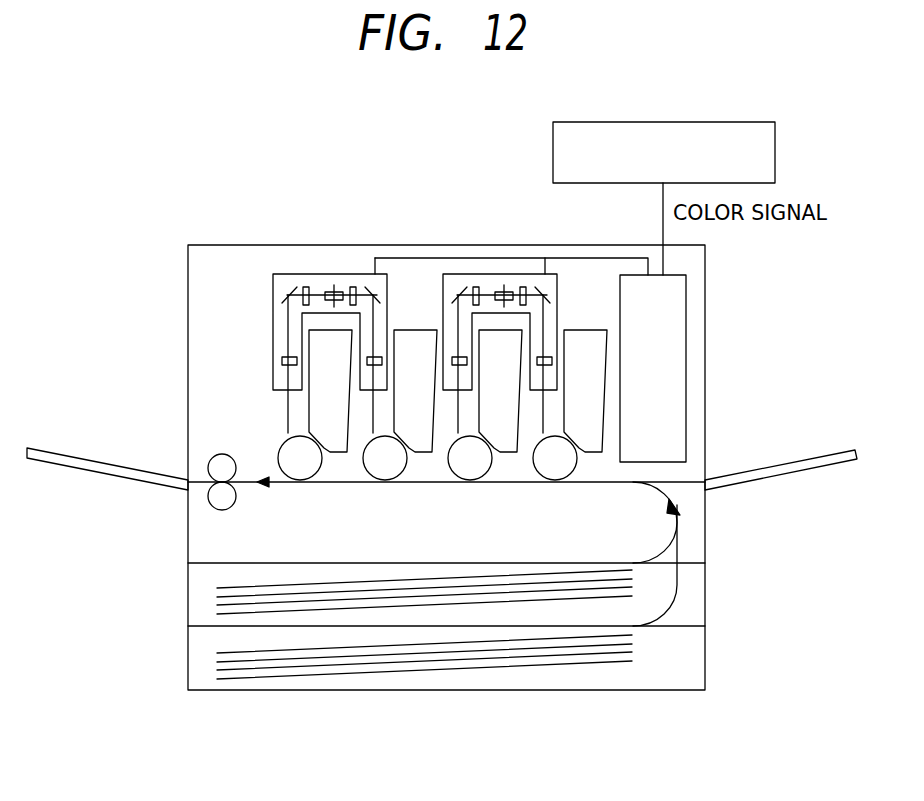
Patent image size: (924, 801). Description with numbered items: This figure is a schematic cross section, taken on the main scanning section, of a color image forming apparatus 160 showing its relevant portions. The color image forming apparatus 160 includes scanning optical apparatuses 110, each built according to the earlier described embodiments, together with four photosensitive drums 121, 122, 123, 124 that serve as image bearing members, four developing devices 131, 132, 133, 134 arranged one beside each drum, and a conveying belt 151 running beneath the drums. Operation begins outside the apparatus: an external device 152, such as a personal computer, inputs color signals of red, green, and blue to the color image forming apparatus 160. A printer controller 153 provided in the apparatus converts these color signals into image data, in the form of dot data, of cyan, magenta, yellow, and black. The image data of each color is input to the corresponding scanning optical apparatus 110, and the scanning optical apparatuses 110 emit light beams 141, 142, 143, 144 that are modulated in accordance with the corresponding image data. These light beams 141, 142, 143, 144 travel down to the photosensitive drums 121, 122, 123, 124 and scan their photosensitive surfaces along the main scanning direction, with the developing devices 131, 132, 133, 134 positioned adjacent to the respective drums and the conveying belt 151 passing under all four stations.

The scanning optical apparatus 110 is at (273, 318).
The photosensitive drum 121 is at (295, 470).
The photosensitive drum 122 is at (380, 470).
The photosensitive drum 123 is at (465, 470).
The photosensitive drum 124 is at (550, 470).
The developing device 131 is at (309, 376).
The developing device 132 is at (414, 328).
The developing device 133 is at (492, 328).
The developing device 134 is at (587, 328).
The light beam 141 is at (283, 405).
The light beam 142 is at (368, 405).
The light beam 143 is at (453, 405).
The light beam 144 is at (538, 405).
The conveying belt 151 is at (677, 523).
The external device 152 is at (705, 121).
The printer controller 153 is at (686, 347).
The color image forming apparatus 160 is at (642, 675).